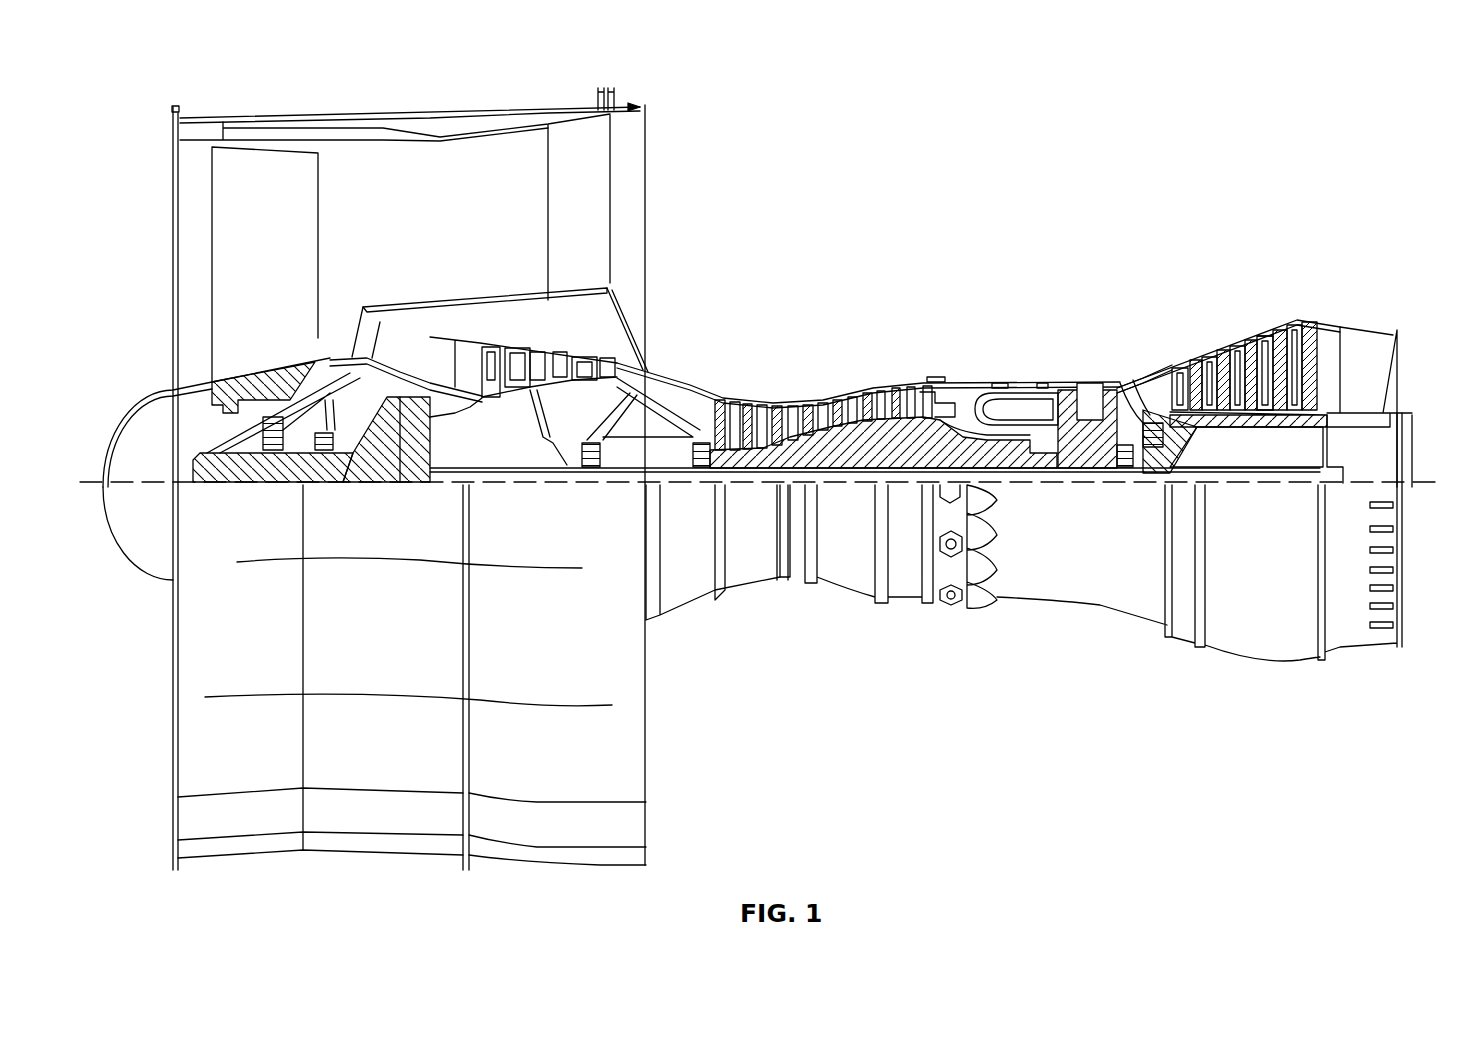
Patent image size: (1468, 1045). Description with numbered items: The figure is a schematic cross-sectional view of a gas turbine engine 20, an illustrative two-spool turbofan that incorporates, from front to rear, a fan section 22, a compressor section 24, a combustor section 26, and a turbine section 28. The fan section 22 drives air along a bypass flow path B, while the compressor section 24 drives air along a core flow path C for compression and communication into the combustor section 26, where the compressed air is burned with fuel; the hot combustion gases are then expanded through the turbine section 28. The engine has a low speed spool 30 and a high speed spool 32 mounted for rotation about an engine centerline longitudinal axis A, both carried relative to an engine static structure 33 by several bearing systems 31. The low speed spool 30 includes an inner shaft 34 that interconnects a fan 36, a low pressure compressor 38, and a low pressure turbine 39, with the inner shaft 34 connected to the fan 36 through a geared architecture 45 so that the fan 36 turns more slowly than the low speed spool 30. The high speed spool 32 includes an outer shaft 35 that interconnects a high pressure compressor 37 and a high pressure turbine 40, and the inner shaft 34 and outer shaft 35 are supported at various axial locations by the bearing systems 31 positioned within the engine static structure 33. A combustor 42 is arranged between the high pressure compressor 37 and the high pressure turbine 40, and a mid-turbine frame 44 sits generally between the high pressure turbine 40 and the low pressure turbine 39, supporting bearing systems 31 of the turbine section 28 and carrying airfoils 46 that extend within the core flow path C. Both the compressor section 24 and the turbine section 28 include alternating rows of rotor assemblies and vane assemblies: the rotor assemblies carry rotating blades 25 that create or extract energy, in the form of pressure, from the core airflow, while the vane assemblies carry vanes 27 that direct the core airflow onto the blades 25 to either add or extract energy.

The gas turbine engine 20 is at (1222, 152).
The fan section 22 is at (220, 88).
The compressor section 24 is at (715, 375).
The rotating blades 25 is at (490, 347).
The combustor section 26 is at (970, 358).
The vanes 27 is at (517, 352).
The turbine section 28 is at (1208, 290).
The low speed spool 30 is at (822, 480).
The bearing systems 31 is at (312, 458).
The high speed spool 32 is at (880, 430).
The engine static structure 33 is at (910, 603).
The inner shaft 34 is at (705, 482).
The outer shaft 35 is at (1030, 478).
The fan 36 is at (408, 508).
The high pressure compressor 37 is at (823, 440).
The low pressure compressor 38 is at (563, 352).
The low pressure turbine 39 is at (1252, 345).
The high pressure turbine 40 is at (1087, 395).
The combustor 42 is at (1010, 400).
The mid-turbine frame 44 is at (1148, 382).
The geared architecture 45 is at (412, 455).
The airfoils 46 is at (1130, 400).
The engine centerline longitudinal axis A is at (1418, 482).
The bypass flow path B is at (490, 215).
The core flow path C is at (400, 352).